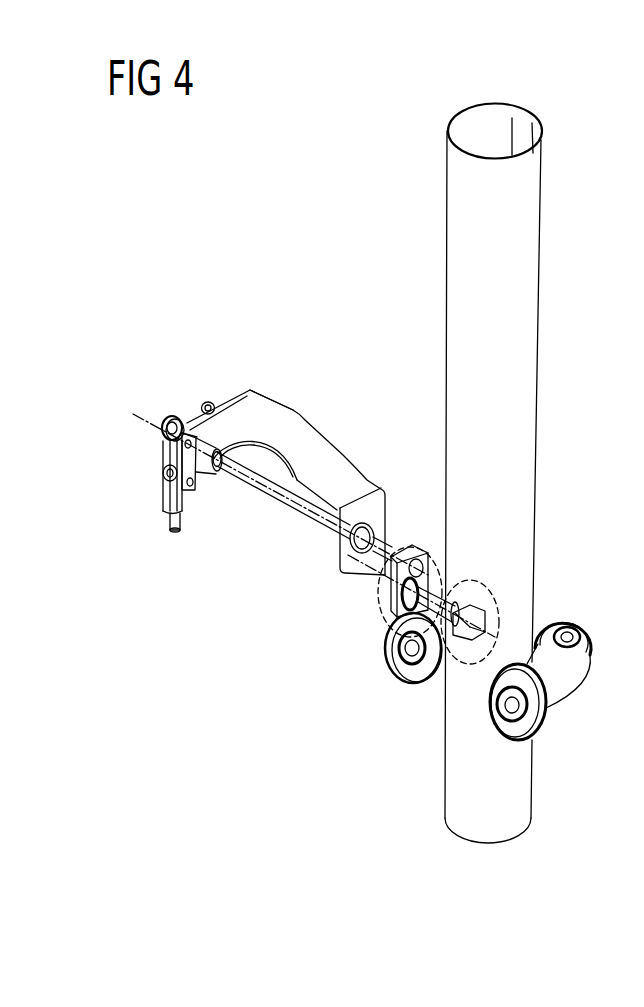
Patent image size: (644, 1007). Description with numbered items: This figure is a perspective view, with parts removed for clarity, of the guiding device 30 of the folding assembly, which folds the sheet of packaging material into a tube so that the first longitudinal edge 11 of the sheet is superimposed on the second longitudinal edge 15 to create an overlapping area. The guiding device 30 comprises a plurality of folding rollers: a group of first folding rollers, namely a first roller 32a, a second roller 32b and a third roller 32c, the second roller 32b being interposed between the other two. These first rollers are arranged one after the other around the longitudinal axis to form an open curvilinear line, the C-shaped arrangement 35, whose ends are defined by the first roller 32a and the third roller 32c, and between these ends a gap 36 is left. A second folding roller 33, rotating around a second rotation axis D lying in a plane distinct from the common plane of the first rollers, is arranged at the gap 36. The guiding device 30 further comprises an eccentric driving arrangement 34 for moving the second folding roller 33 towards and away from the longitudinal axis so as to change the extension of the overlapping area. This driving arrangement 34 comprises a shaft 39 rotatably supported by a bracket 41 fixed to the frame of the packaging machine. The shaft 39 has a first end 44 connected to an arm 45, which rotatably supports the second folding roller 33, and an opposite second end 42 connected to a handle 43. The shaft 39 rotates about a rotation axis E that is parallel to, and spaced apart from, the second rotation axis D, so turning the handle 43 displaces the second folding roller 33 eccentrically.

The first longitudinal edge 11 is at (527, 122).
The second longitudinal edge 15 is at (508, 122).
The guiding device 30 is at (418, 410).
The first roller 32a is at (423, 677).
The second roller 32b is at (546, 610).
The third roller 32c is at (558, 703).
The second folding roller 33 is at (470, 594).
The driving arrangement 34 is at (317, 360).
The C-shaped arrangement 35 is at (553, 556).
The gap 36 is at (421, 716).
The shaft 39 is at (272, 493).
The bracket 41 is at (242, 403).
The second end 42 is at (170, 382).
The handle 43 is at (163, 503).
The first end 44 is at (352, 607).
The arm 45 is at (413, 543).
The second rotation axis D is at (360, 568).
The rotation axis E is at (137, 413).